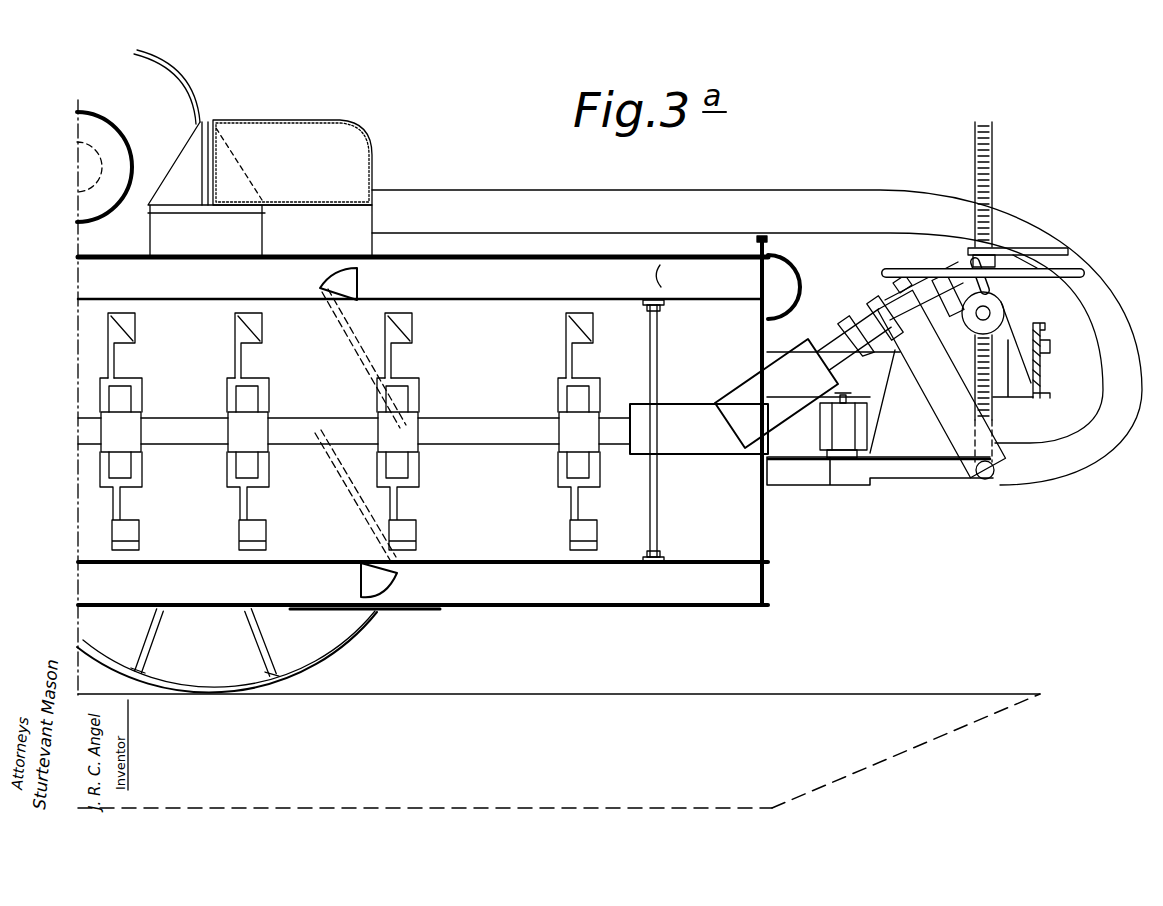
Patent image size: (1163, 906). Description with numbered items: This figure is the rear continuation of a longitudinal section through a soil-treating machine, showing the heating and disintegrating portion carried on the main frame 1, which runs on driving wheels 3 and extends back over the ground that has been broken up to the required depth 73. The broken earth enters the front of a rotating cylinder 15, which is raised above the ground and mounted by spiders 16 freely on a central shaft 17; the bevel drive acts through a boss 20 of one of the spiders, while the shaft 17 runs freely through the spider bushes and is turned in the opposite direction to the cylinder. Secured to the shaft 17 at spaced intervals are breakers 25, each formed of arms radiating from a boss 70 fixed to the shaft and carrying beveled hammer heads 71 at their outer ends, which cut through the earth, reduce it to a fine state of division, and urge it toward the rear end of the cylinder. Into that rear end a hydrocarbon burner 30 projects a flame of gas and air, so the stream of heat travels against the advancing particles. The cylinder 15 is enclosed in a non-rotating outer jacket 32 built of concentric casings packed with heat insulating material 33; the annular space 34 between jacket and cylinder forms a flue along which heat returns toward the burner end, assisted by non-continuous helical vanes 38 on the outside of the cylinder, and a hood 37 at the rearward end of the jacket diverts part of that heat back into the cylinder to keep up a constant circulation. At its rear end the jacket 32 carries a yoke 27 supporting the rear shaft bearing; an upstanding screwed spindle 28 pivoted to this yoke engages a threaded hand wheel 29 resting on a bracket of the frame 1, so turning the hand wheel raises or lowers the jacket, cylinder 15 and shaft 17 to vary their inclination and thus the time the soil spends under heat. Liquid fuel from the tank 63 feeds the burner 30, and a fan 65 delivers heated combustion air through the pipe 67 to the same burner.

The frame 1 is at (1041, 376).
The driving wheels 3 is at (360, 630).
The rotating cylinder 15 is at (208, 562).
The spiders 16 is at (657, 511).
The central shaft 17 is at (170, 437).
The boss 20 is at (699, 429).
The breakers 25 is at (124, 362).
The yoke 27 is at (906, 470).
The screwed spindle 28 is at (998, 413).
The hand wheel 29 is at (1070, 268).
The burner 30 is at (809, 377).
The outer jacket 32 is at (563, 255).
The heat insulating material 33 is at (676, 277).
The annular space 34 is at (420, 282).
The hood 37 is at (797, 271).
The helical vanes 38 is at (358, 277).
The tank 63 is at (292, 162).
The fan 65 is at (168, 92).
The pipe 67 is at (463, 190).
The boss 70 is at (142, 417).
The hammer heads 71 is at (136, 327).
The depth 73 is at (482, 808).